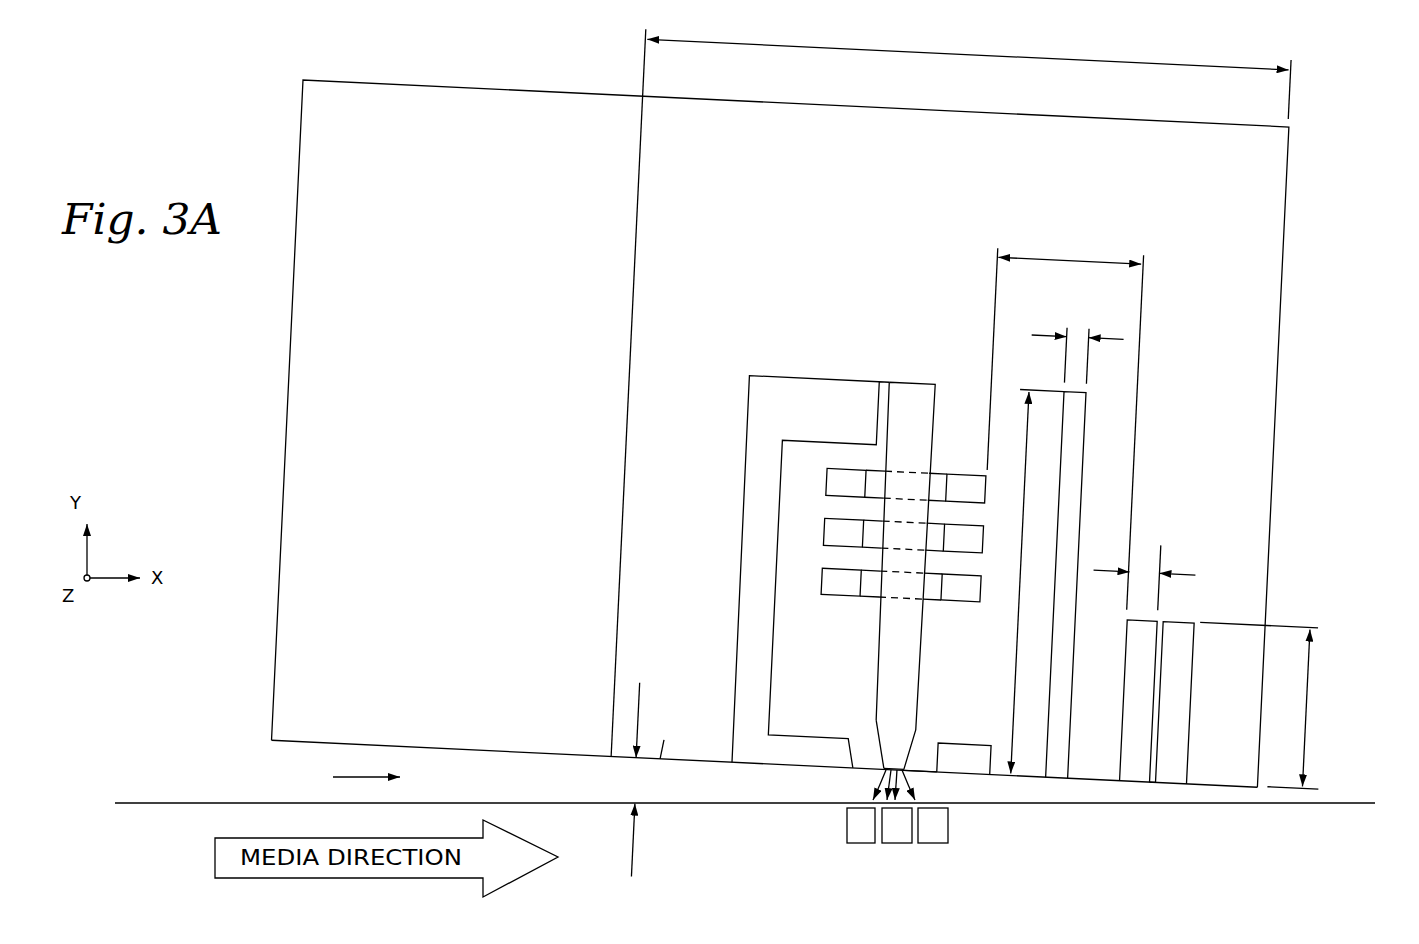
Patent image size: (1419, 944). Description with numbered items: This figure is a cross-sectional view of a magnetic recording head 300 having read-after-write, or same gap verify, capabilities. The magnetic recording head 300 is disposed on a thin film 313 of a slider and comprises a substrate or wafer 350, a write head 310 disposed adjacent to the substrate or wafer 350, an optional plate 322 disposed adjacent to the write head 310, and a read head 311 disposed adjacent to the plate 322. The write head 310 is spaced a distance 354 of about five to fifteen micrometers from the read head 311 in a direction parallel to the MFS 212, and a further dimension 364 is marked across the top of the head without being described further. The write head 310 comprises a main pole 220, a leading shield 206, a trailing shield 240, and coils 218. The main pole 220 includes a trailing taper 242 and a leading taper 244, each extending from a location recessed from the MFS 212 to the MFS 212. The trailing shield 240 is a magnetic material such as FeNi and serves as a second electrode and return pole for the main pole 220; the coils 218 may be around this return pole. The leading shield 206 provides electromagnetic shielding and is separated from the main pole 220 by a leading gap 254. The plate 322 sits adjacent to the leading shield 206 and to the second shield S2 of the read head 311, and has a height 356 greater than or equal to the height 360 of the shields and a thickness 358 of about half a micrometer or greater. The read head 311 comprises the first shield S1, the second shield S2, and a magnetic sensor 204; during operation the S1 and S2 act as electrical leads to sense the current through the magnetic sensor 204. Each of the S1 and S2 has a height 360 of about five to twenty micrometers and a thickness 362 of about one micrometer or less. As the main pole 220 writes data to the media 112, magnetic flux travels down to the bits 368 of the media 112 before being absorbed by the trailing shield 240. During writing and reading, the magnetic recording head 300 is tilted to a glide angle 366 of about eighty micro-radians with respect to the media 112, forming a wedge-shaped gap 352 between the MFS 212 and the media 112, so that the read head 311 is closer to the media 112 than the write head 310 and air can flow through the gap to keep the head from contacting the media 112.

The magnetic recording head 300 is at (168, 82).
The substrate or wafer 350 is at (477, 433).
The write head 310 is at (783, 307).
The thin film of slider 313 is at (958, 178).
The read head 311 is at (1170, 495).
The writer-reader length 364 is at (990, 48).
The distance 354 is at (1060, 258).
The thickness of plate 358 is at (1077, 338).
The height of plate 356 is at (1018, 664).
The thickness of S1 and S2 362 is at (1150, 573).
The height of S1 and S2 360 is at (1310, 706).
The glide angle 366 is at (632, 777).
The wedge-shaped gap 352 is at (343, 778).
The media facing surface MFS is at (667, 735).
The media facing surface 212 is at (817, 767).
The trailing shield 240 is at (758, 752).
The main pole 220 is at (888, 633).
The trailing taper 242 is at (877, 732).
The leading taper 244 is at (912, 752).
The coil 218 is at (957, 601).
The leading shield 206 is at (972, 750).
The leading gap 254 is at (923, 758).
The plate 322 is at (1075, 462).
The second shield S2 is at (1137, 702).
The first shield S1 is at (1175, 703).
The magnetic sensor 204 is at (1152, 778).
The media 112 is at (1348, 798).
The bits 368 is at (932, 835).